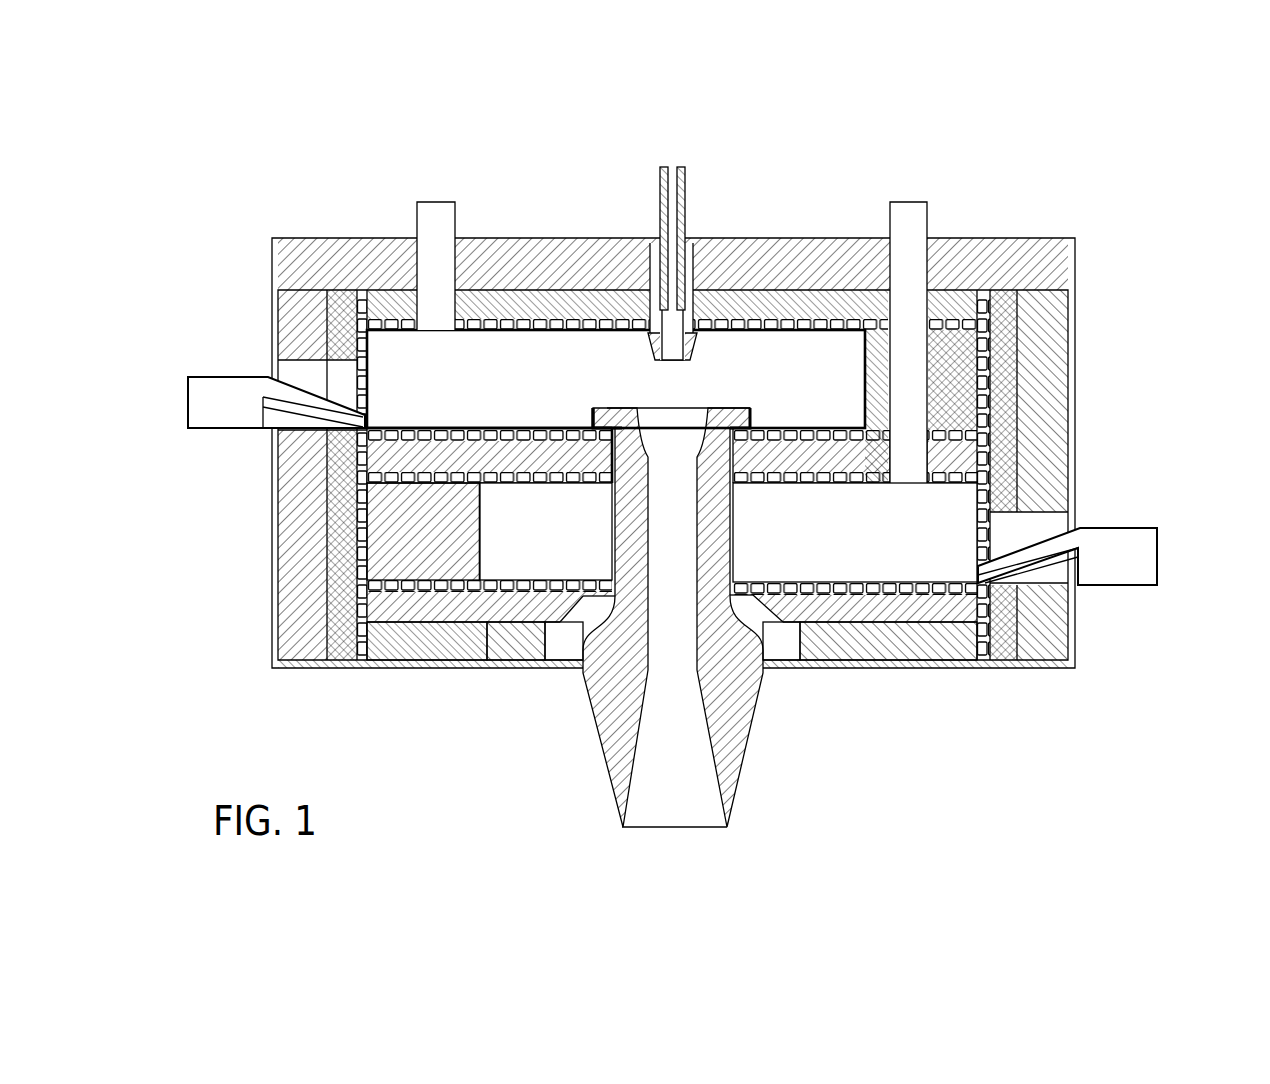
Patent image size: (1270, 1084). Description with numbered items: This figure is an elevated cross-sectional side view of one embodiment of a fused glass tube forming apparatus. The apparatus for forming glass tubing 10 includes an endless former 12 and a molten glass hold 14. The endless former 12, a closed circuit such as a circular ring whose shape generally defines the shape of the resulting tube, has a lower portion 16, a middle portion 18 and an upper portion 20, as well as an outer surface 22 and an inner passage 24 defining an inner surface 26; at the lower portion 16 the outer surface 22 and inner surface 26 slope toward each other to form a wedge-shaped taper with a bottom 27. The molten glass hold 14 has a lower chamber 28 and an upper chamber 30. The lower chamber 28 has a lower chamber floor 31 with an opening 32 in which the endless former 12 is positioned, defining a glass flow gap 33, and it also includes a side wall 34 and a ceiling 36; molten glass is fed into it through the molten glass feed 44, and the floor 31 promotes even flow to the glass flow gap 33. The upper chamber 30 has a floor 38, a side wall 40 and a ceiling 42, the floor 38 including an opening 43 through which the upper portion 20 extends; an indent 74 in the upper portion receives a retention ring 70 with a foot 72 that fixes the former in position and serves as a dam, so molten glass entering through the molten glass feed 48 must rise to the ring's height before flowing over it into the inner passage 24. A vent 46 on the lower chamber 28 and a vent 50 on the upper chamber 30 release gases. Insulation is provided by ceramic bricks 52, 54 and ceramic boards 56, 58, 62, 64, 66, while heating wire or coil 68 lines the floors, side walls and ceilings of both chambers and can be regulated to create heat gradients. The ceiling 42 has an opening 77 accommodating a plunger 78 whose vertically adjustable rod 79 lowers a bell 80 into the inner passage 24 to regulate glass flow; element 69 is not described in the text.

The apparatus for forming glass tubing 10 is at (1072, 210).
The endless former 12 is at (810, 752).
The molten glass hold 14 is at (1107, 279).
The lower portion 16 is at (747, 730).
The middle portion 18 is at (733, 540).
The upper portion 20 is at (748, 418).
The outer surface 22 is at (593, 737).
The inner passage 24 is at (690, 820).
The inner surface 26 is at (622, 828).
The bottom 27 is at (727, 830).
The lower chamber 28 is at (957, 513).
The upper chamber 30 is at (558, 358).
The lower chamber floor 31 is at (503, 582).
The opening 32 is at (560, 652).
The glass flow gap 33 is at (755, 595).
The side wall 34 is at (483, 523).
The ceiling 36 is at (558, 485).
The floor 38 is at (437, 427).
The side wall 40 is at (370, 390).
The ceiling 42 is at (400, 332).
The opening 43 is at (588, 427).
The molten glass feed 44 is at (1135, 552).
The vent 46 is at (900, 212).
The molten glass feed 48 is at (230, 393).
The vent 50 is at (435, 228).
The ceramic brick 52 is at (330, 527).
The ceramic brick 54 is at (1070, 337).
The ceramic board 56 is at (323, 253).
The ceramic board 58 is at (280, 490).
The ceramic board 62 is at (487, 657).
The ceramic board 64 is at (383, 663).
The ceramic board 66 is at (276, 630).
The heating wire or coil 68 is at (277, 460).
The housing bottom wall 69 is at (272, 668).
The retention ring 70 is at (593, 400).
The foot 72 is at (612, 408).
The indent 74 is at (650, 420).
The opening 77 is at (727, 238).
The plunger 78 is at (640, 170).
The rod 79 is at (687, 218).
The bell 80 is at (703, 353).